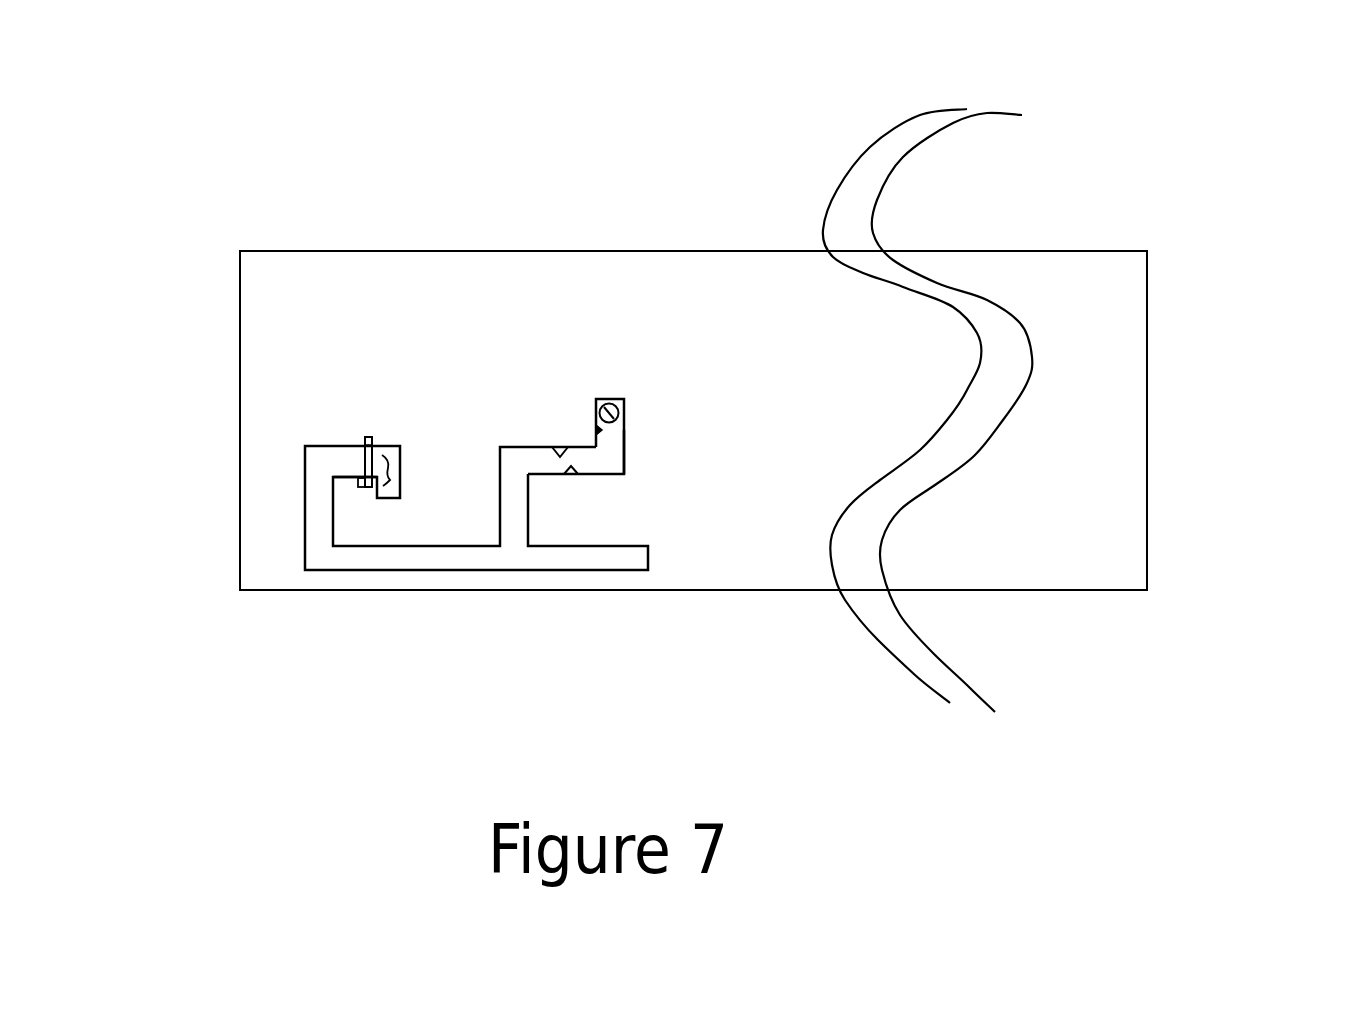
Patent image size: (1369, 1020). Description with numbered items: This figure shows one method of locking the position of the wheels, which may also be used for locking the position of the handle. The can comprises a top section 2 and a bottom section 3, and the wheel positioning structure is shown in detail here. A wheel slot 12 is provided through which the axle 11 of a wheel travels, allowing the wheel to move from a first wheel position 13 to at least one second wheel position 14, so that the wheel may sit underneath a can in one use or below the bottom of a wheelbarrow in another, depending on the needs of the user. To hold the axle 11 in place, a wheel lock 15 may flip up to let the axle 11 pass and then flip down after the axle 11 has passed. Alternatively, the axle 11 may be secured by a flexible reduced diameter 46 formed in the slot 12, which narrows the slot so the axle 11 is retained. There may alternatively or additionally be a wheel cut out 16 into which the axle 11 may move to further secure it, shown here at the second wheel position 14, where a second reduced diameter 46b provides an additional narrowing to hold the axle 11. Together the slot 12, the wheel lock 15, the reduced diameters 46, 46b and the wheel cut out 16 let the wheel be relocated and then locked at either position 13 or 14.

The top section 2 is at (1093, 457).
The bottom section 3 is at (848, 353).
The axle 11 is at (597, 402).
The wheel slot 12 is at (378, 559).
The first wheel position 13 is at (340, 480).
The second wheel position 14 is at (616, 399).
The wheel lock 15 is at (367, 450).
The wheel cut out 16 is at (618, 438).
The flexible reduced diameter 46 is at (574, 469).
The second reduced diameter 46b is at (602, 428).